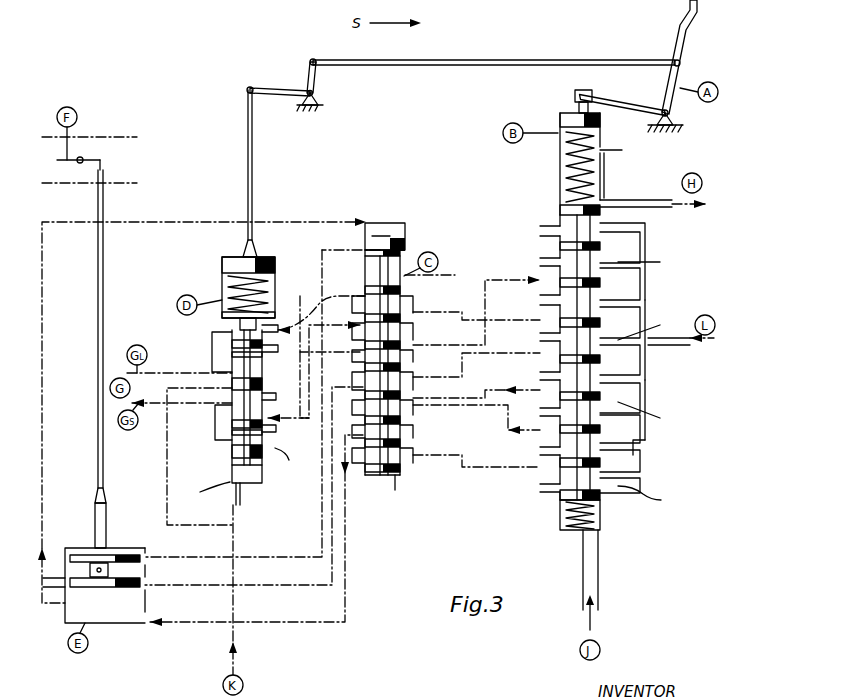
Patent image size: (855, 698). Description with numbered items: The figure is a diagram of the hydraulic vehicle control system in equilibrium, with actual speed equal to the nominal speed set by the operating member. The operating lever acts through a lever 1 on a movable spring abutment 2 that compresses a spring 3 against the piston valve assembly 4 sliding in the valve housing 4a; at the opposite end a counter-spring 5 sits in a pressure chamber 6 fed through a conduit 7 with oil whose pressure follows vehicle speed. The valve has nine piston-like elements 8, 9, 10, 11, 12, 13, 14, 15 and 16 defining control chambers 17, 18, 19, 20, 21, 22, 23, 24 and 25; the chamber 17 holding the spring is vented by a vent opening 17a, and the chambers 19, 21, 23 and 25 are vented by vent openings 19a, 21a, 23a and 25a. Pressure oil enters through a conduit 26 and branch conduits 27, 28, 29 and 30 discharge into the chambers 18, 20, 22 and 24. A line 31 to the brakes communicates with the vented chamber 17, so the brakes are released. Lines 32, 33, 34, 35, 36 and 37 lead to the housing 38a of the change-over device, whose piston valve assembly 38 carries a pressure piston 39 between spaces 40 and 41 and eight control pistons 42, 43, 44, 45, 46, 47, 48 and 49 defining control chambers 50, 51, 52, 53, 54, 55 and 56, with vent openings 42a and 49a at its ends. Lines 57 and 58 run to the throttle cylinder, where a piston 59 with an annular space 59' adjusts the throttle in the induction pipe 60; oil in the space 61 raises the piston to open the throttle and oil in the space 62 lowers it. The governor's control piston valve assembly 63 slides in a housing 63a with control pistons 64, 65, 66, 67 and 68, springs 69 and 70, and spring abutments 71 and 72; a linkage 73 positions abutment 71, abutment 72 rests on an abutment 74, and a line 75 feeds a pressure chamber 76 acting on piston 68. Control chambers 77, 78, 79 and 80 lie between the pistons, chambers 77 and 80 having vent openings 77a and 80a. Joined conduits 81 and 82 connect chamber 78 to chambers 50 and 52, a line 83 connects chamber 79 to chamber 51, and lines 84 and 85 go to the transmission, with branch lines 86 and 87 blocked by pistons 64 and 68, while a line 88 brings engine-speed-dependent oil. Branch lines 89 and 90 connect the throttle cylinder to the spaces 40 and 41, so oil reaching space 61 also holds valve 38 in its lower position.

The lever 1 is at (625, 108).
The movable spring abutment 2 is at (560, 122).
The compression spring 3 is at (565, 150).
The piston valve assembly 4 is at (590, 228).
The valve housing 4a is at (606, 182).
The counter-spring 5 is at (560, 517).
The pressure chamber 6 is at (596, 516).
The conduit 7 is at (598, 565).
The piston element 8 is at (560, 210).
The piston element 9 is at (600, 247).
The piston element 10 is at (600, 284).
The piston element 11 is at (600, 322).
The piston element 12 is at (600, 360).
The piston element 13 is at (600, 398).
The piston element 14 is at (600, 429).
The piston element 15 is at (600, 461).
The piston element 16 is at (600, 489).
The chamber 17 is at (560, 185).
The vent opening 17a is at (626, 150).
The control chamber 18 is at (560, 232).
The control chamber 19 is at (560, 262).
The vent opening 19a is at (653, 263).
The control chamber 20 is at (560, 301).
The control chamber 21 is at (560, 338).
The vent opening 21a is at (649, 324).
The control chamber 22 is at (560, 376).
The control chamber 23 is at (560, 413).
The vent opening 23a is at (652, 416).
The control chamber 24 is at (560, 450).
The control chamber 25 is at (560, 488).
The vent opening 25a is at (653, 494).
The conduit 26 is at (665, 346).
The branch conduit 27 is at (625, 230).
The branch conduit 28 is at (632, 310).
The branch conduit 29 is at (632, 380).
The branch conduit 30 is at (634, 448).
The line 31 is at (649, 200).
The line 32 is at (494, 279).
The line 33 is at (498, 320).
The line 34 is at (501, 353).
The line 35 is at (494, 389).
The line 36 is at (508, 428).
The line 37 is at (492, 467).
The piston valve assembly 38 is at (368, 255).
The housing 38a is at (336, 250).
The pressure piston 39 is at (395, 235).
The space 40 is at (376, 233).
The space 41 is at (405, 244).
The control piston 42 is at (402, 290).
The vent opening 42a is at (436, 278).
The control piston 43 is at (402, 319).
The control piston 44 is at (402, 346).
The control piston 45 is at (402, 368).
The control piston 46 is at (402, 396).
The control piston 47 is at (402, 420).
The control piston 48 is at (402, 443).
The control piston 49 is at (402, 469).
The vent opening 49a is at (396, 491).
The control chamber 50 is at (360, 305).
The control chamber 51 is at (360, 332).
The control chamber 52 is at (360, 357).
The control chamber 53 is at (360, 378).
The control chamber 54 is at (360, 407).
The control chamber 55 is at (360, 432).
The control chamber 56 is at (360, 454).
The line 57 is at (275, 557).
The line 58 is at (283, 623).
The piston 59 is at (94, 585).
The annular space 59' is at (130, 570).
The induction pipe 60 is at (108, 137).
The space 61 is at (120, 623).
The space 62 is at (85, 548).
The control piston valve assembly 63 is at (262, 380).
The housing 63a is at (213, 492).
The control piston 64 is at (281, 320).
The control piston 65 is at (278, 349).
The control piston 66 is at (279, 395).
The control piston 67 is at (279, 431).
The control piston 68 is at (262, 455).
The spring 69 is at (225, 268).
The spring 70 is at (230, 290).
The spring abutment 71 is at (238, 262).
The spring abutment 72 is at (222, 315).
The linkage 73 is at (318, 80).
The abutment 74 is at (240, 325).
The line 75 is at (241, 494).
The pressure chamber 76 is at (262, 478).
The control chamber 77 is at (239, 341).
The vent opening 77a is at (321, 305).
The control chamber 78 is at (236, 356).
The control chamber 79 is at (240, 419).
The control chamber 80 is at (236, 433).
The vent opening 80a is at (296, 460).
The conduit 81 is at (329, 311).
The conduit 82 is at (314, 371).
The line 83 is at (299, 396).
The line 84 is at (168, 372).
The line 85 is at (158, 404).
The branch line 86 is at (212, 343).
The branch line 87 is at (215, 425).
The line 88 is at (167, 475).
The branch line 89 is at (42, 352).
The branch line 90 is at (194, 585).